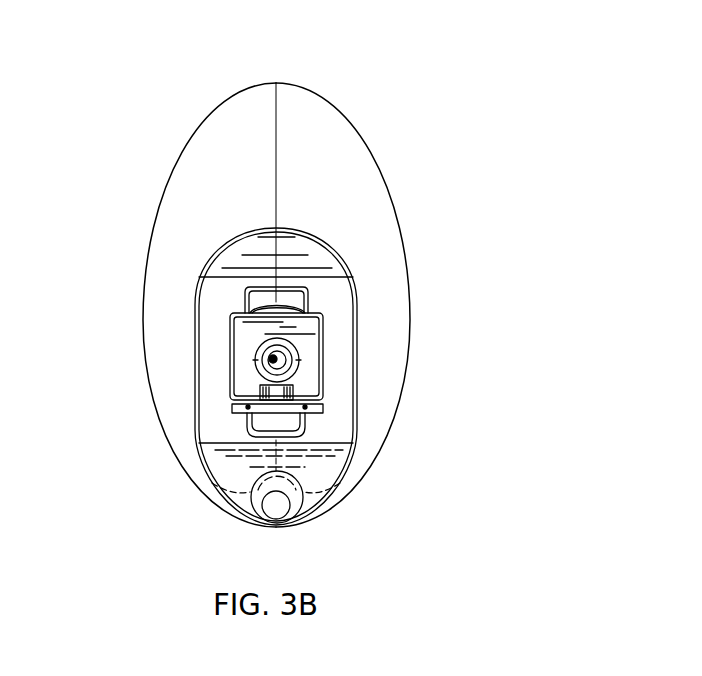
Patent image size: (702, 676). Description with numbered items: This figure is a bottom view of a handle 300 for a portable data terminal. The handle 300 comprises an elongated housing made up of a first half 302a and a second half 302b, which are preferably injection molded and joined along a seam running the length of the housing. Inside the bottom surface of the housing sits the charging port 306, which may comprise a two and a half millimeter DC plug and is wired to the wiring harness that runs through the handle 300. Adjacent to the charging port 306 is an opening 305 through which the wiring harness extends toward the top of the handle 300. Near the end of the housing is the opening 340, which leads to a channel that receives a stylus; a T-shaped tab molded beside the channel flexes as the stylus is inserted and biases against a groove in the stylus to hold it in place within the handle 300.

The handle 300 is at (207, 85).
The first half 302a is at (392, 193).
The second half 302b is at (163, 192).
The opening 305 is at (230, 359).
The charging port 306 is at (297, 350).
The opening 340 is at (290, 505).